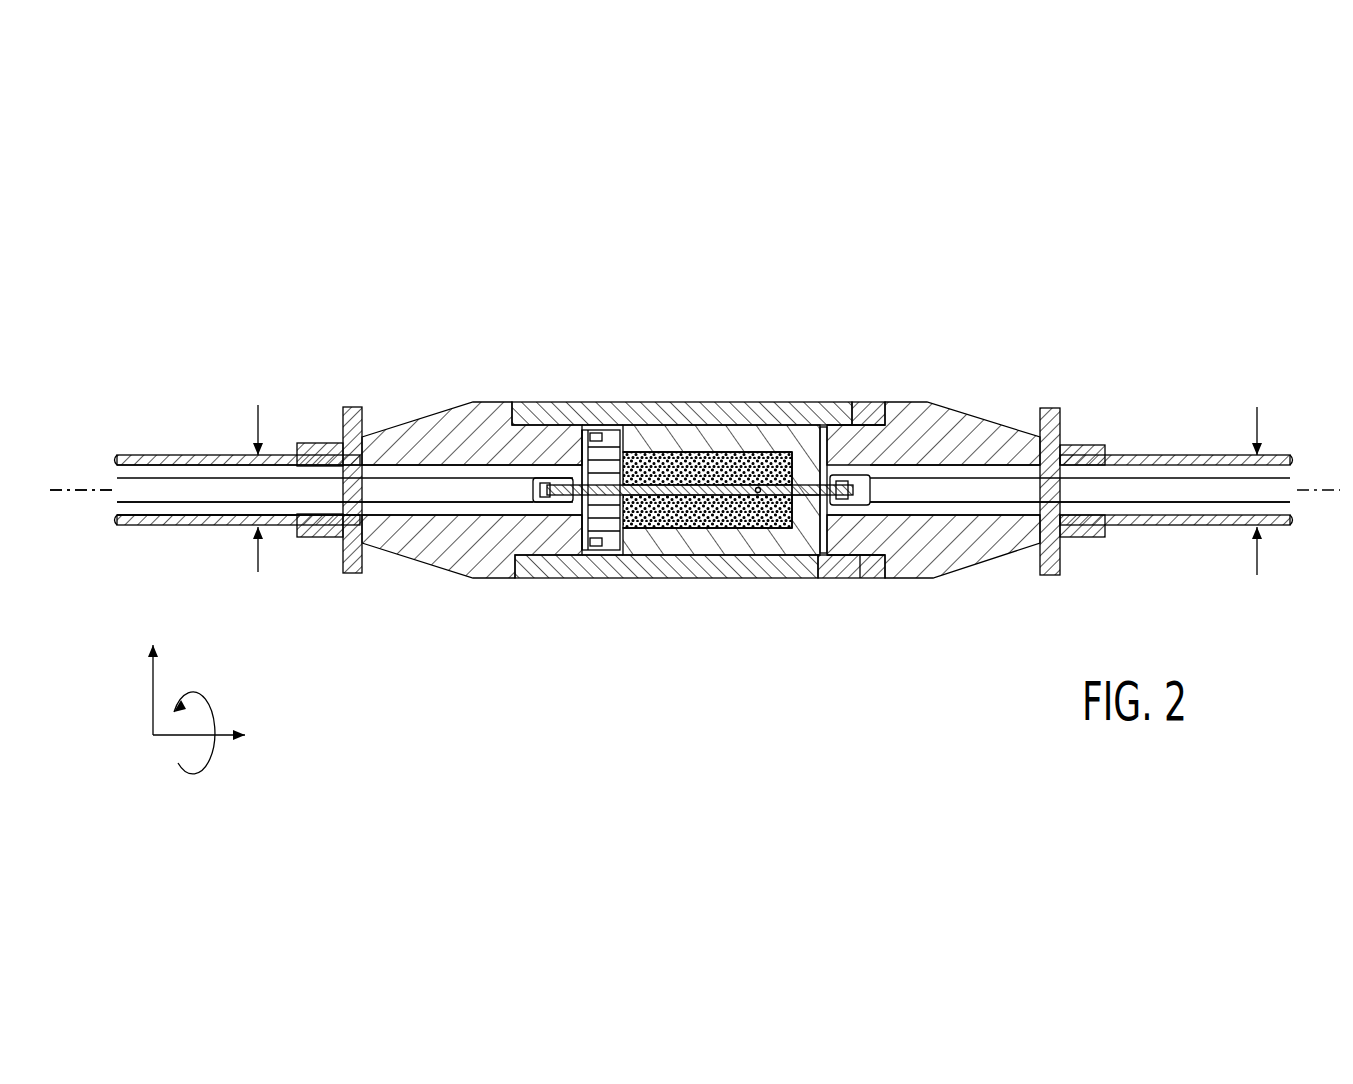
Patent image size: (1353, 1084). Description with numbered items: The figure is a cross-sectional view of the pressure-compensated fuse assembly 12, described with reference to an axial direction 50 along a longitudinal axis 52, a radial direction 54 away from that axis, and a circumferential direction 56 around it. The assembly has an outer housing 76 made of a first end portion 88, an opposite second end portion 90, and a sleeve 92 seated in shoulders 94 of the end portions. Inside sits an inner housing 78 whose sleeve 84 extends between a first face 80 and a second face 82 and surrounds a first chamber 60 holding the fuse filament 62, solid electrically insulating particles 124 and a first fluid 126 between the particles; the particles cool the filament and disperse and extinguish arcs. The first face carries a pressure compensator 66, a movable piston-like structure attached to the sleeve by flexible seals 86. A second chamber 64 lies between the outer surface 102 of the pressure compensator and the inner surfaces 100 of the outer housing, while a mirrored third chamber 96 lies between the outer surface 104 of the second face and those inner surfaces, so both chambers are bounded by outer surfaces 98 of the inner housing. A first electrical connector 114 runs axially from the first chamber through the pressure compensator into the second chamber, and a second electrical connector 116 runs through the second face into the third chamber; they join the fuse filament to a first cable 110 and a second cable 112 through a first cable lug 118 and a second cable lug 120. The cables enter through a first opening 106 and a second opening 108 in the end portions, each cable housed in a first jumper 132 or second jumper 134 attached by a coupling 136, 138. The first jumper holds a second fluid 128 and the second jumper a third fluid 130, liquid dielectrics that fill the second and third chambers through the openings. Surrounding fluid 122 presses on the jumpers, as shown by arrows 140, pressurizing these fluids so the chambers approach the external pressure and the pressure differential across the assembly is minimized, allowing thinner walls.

The pressure-compensated fuse assembly 12 is at (990, 277).
The axial direction 50 is at (170, 737).
The longitudinal axis 52 is at (108, 492).
The radial direction 54 is at (153, 695).
The circumferential direction 56 is at (213, 708).
The first chamber 60 is at (712, 510).
The fuse filament 62 is at (750, 500).
The second chamber 64 is at (560, 512).
The pressure compensator 66 is at (610, 470).
The outer housing 76 is at (1008, 400).
The inner housing 78 is at (848, 450).
The first face 80 is at (555, 540).
The second face 82 is at (828, 462).
The sleeve 84 is at (730, 458).
The seals 86 is at (590, 430).
The first end portion 88 is at (477, 418).
The second end portion 90 is at (917, 407).
The sleeve 92 is at (698, 440).
The shoulders 94 is at (847, 562).
The third chamber 96 is at (870, 530).
The outer surfaces 98 is at (872, 415).
The inner surfaces 100 is at (947, 467).
The outer surface 102 is at (556, 505).
The outer surface 104 is at (835, 540).
The first opening 106 is at (347, 475).
The second opening 108 is at (1055, 473).
The first cable 110 is at (167, 478).
The second cable 112 is at (1200, 478).
The first electrical connector 114 is at (652, 528).
The second electrical connector 116 is at (800, 505).
The first cable lug 118 is at (540, 480).
The second cable lug 120 is at (872, 506).
The surrounding fluid 122 is at (550, 268).
The solid electrically insulating particles 124 is at (760, 453).
The first fluid 126 is at (753, 455).
The second fluid 128 is at (172, 508).
The third fluid 130 is at (1195, 512).
The first jumper 132 is at (212, 455).
The second jumper 134 is at (1160, 455).
The coupling 136 is at (352, 407).
The coupling 138 is at (1052, 407).
The arrows 140 is at (258, 572).